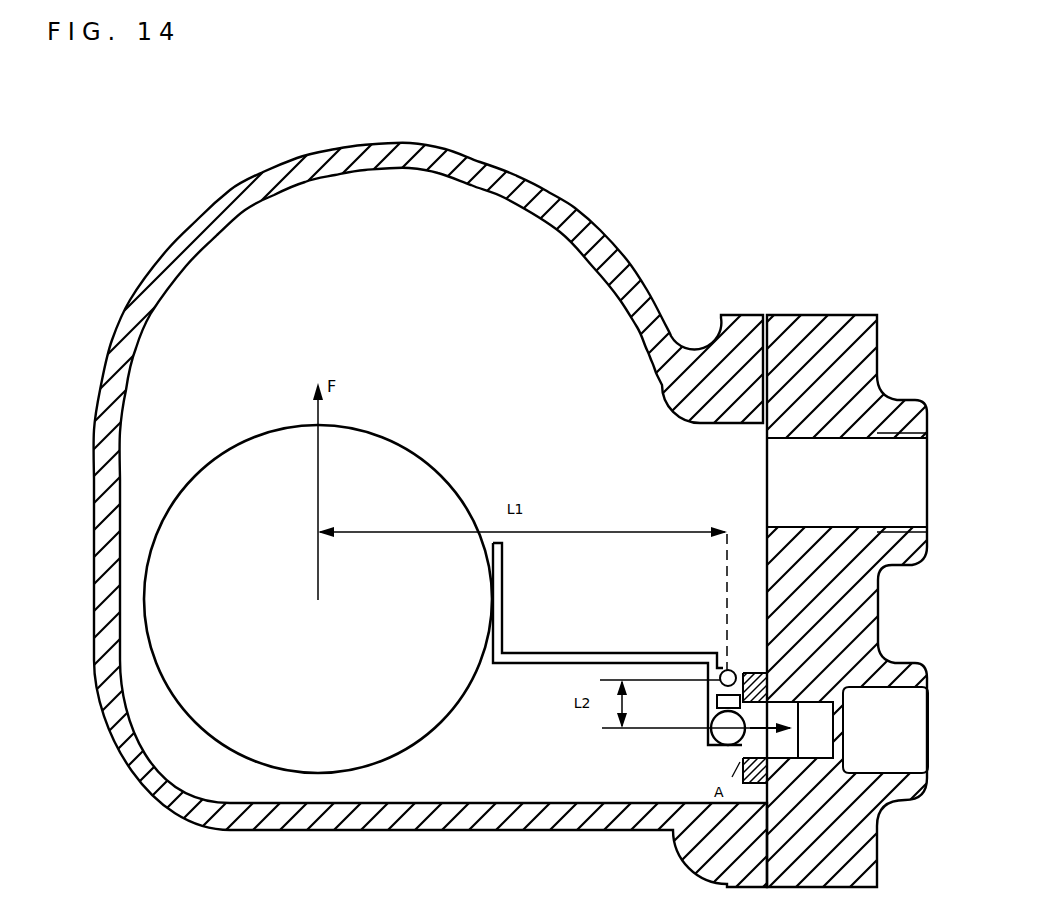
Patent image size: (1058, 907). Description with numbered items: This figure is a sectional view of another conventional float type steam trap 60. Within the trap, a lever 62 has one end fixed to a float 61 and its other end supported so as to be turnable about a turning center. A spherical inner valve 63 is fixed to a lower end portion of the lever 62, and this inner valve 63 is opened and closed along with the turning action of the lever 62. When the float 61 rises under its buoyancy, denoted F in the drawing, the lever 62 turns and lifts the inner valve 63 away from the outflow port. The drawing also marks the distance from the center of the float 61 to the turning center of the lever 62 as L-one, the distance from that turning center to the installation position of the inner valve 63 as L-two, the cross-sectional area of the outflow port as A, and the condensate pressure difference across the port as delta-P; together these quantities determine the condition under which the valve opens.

The float type steam trap 60 is at (634, 222).
The float 61 is at (262, 708).
The lever 62 is at (515, 667).
The inner valve 63 is at (725, 737).